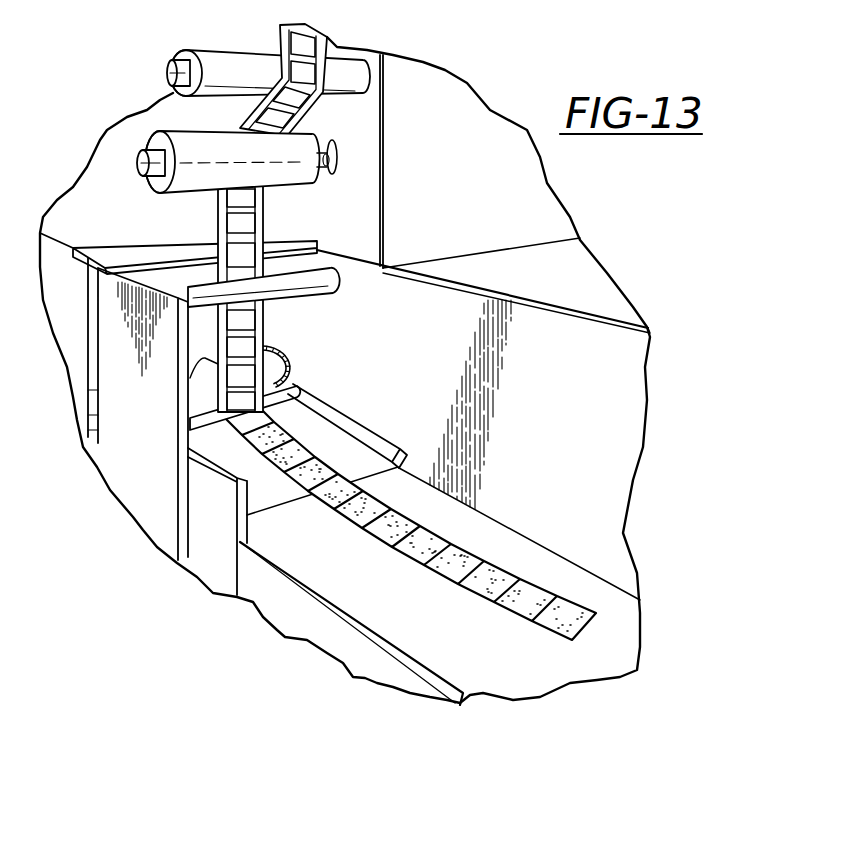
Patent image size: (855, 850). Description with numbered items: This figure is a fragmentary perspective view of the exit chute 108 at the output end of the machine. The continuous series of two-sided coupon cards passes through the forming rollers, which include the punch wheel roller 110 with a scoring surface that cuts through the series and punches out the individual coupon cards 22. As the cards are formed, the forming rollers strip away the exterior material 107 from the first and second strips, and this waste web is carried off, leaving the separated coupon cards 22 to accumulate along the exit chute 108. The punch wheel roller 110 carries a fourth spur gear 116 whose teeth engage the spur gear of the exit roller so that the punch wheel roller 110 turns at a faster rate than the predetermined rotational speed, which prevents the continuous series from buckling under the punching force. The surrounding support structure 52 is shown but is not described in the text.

The exterior material 107 is at (263, 222).
The fourth spur gear 116 is at (290, 373).
The support wall 52 is at (573, 330).
The coupon cards 22 is at (375, 510).
The punch wheel roller 110 is at (197, 390).
The exit chute 108 is at (353, 593).